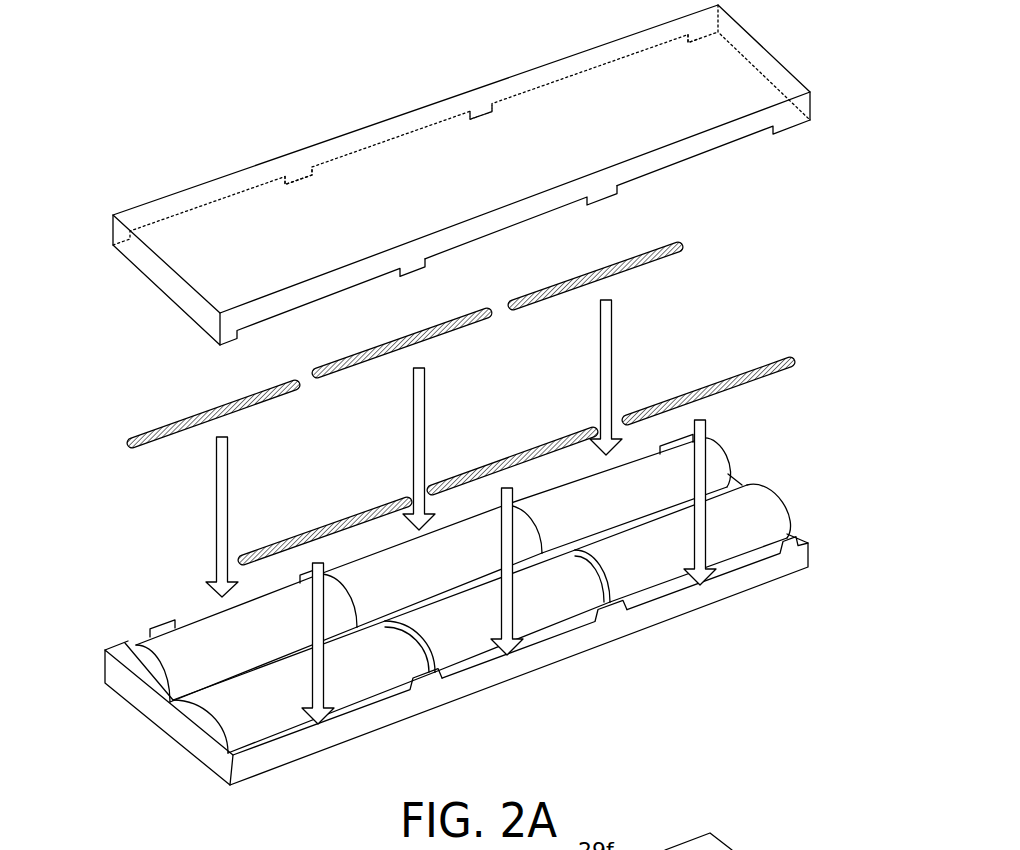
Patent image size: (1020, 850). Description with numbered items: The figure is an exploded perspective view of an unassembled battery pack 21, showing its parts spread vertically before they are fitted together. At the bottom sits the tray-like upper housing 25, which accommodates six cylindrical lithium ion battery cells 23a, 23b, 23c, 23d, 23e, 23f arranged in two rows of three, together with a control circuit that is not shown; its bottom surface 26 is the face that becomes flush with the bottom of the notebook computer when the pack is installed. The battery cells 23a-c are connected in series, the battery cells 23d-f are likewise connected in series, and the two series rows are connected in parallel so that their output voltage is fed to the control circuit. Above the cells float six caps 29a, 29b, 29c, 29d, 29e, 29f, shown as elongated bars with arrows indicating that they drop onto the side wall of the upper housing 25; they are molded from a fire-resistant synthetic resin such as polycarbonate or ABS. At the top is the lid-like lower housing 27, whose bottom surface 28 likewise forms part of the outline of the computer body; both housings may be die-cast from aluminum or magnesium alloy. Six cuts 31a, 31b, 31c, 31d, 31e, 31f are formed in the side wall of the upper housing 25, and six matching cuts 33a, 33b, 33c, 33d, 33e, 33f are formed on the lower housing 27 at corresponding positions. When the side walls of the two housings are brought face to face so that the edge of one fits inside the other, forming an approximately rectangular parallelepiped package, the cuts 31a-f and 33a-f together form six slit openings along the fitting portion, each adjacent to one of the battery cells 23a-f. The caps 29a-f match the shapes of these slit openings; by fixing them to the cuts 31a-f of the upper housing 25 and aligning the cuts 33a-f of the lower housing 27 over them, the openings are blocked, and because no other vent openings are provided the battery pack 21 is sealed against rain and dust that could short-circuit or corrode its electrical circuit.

The battery pack 21 is at (402, 67).
The battery cell 23a is at (249, 719).
The battery cell 23b is at (436, 645).
The battery cell 23c is at (630, 572).
The battery cell 23d is at (197, 662).
The battery cell 23e is at (395, 588).
The battery cell 23f is at (584, 515).
The upper housing 25 is at (434, 638).
The bottom surface 26 is at (275, 792).
The lower housing 27 is at (160, 291).
The bottom surface 28 is at (471, 185).
The cap 29a is at (357, 512).
The cap 29b is at (535, 443).
The cap 29c is at (687, 390).
The cap 29d is at (228, 420).
The cap 29e is at (347, 373).
The cap 29f is at (532, 307).
The cut 31a is at (310, 740).
The cut 31b is at (477, 675).
The cut 31c is at (667, 607).
The cut 31d is at (177, 627).
The cut 31e is at (357, 562).
The cut 31f is at (625, 462).
The cut 33a is at (300, 307).
The cut 33b is at (468, 242).
The cut 33c is at (662, 168).
The cut 33d is at (230, 193).
The cut 33e is at (370, 142).
The cut 33f is at (553, 80).